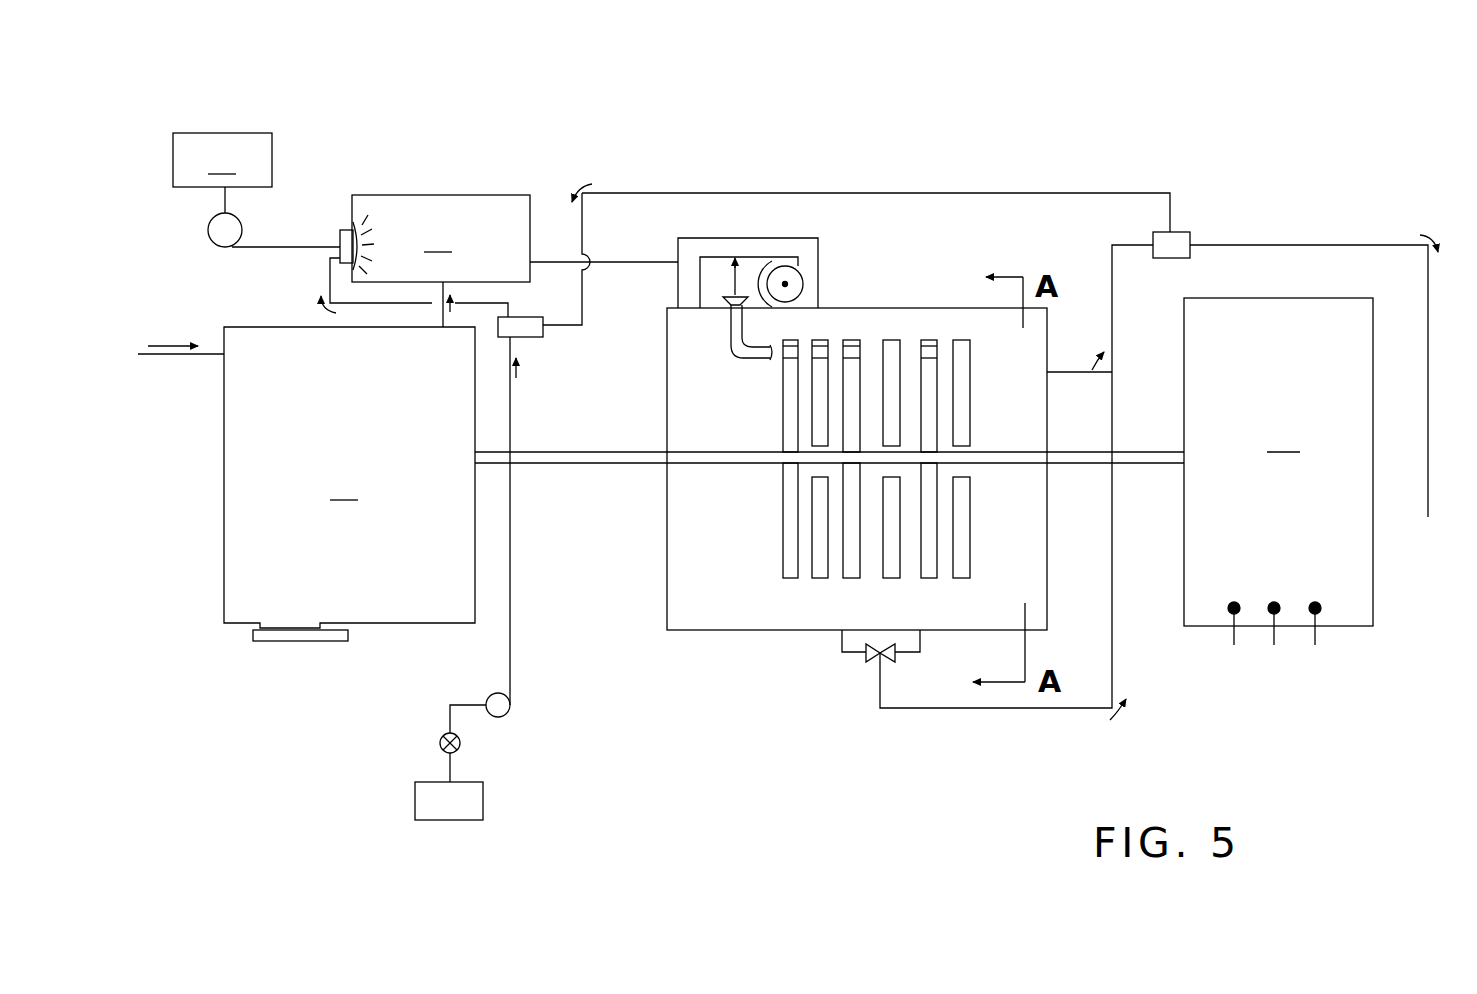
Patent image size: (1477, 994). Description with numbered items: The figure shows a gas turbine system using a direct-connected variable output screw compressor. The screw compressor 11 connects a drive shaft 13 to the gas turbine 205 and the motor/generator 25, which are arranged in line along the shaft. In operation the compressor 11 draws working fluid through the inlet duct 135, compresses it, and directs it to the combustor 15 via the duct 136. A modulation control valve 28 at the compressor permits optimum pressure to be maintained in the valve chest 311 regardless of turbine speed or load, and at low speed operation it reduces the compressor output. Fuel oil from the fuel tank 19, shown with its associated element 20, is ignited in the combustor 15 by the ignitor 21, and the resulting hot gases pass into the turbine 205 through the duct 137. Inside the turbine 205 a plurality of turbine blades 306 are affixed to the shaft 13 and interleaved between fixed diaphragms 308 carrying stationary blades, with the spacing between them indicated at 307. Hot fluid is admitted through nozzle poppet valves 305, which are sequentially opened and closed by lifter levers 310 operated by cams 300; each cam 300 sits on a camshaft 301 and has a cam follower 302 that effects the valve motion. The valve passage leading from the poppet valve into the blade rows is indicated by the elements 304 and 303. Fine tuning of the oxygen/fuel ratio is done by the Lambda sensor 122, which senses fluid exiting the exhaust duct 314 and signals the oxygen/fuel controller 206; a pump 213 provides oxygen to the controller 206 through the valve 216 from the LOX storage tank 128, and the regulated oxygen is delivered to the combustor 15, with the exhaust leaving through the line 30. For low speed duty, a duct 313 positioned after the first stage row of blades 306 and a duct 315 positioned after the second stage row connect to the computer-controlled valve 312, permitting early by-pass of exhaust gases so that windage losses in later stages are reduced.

The screw compressor 11 is at (349, 477).
The drive shaft 13 is at (578, 466).
The combustor 15 is at (441, 238).
The fuel tank 19 is at (222, 173).
The sensor 20 is at (208, 230).
The ignitor 21 is at (338, 230).
The motor/generator 25 is at (1278, 471).
The modulation control valve 28 is at (330, 642).
The outlet line 30 is at (1430, 420).
The Lambda sensor 122 is at (1190, 231).
The liquid oxygen tank 128 is at (477, 822).
The duct 135 is at (166, 356).
The duct 136 is at (441, 318).
The duct 137 is at (623, 257).
The gas turbine 205 is at (710, 631).
The O2/fuel controller 206 is at (536, 338).
The pump 213 is at (511, 704).
The valve 216 is at (440, 740).
The cam 300 is at (805, 284).
The camshaft 301 is at (787, 283).
The cam follower 302 is at (770, 280).
The nozzle 303 is at (772, 362).
The tube 304 is at (742, 346).
The nozzle poppet valve 305 is at (727, 302).
The turbine blade 306 is at (783, 528).
The disc gap 307 is at (846, 343).
The fixed diaphragm 308 is at (967, 517).
The lifter lever 310 is at (750, 256).
The valve chest 311 is at (692, 238).
The computer-controlled valve 312 is at (877, 662).
The duct 313 is at (842, 647).
The exhaust duct 314 is at (1113, 310).
The duct 315 is at (920, 647).